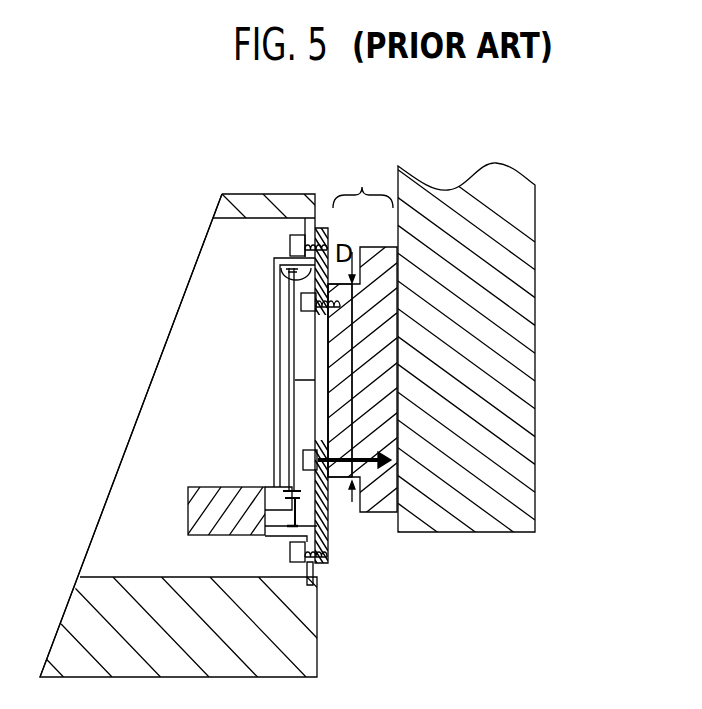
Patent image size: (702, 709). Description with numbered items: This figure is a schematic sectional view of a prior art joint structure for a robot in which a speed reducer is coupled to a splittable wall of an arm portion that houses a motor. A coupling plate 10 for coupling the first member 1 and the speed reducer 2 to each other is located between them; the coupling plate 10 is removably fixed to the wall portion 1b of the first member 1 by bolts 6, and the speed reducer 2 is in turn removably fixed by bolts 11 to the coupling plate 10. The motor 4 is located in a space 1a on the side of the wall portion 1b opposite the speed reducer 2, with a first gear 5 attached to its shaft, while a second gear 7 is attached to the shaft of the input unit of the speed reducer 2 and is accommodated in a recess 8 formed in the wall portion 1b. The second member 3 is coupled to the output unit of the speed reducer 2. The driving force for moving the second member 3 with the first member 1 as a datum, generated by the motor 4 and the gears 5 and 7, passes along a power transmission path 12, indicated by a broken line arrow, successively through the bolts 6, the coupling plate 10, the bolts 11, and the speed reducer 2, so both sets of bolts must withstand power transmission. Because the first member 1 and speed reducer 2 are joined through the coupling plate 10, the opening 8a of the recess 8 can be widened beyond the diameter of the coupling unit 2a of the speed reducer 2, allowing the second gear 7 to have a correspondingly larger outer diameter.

The first member 1 is at (267, 658).
The space 1a is at (135, 500).
The wall portion 1b is at (290, 223).
The speed reducer 2 is at (362, 348).
The coupling unit 2a is at (343, 472).
The second member 3 is at (508, 477).
The motor 4 is at (233, 492).
The first gear 5 is at (265, 517).
The bolts 6 is at (288, 242).
The second gear 7 is at (292, 332).
The recess 8 is at (276, 279).
The opening 8a is at (320, 362).
The coupling plate 10 is at (323, 228).
The bolts 11 is at (282, 284).
The power transmission path 12 is at (400, 493).